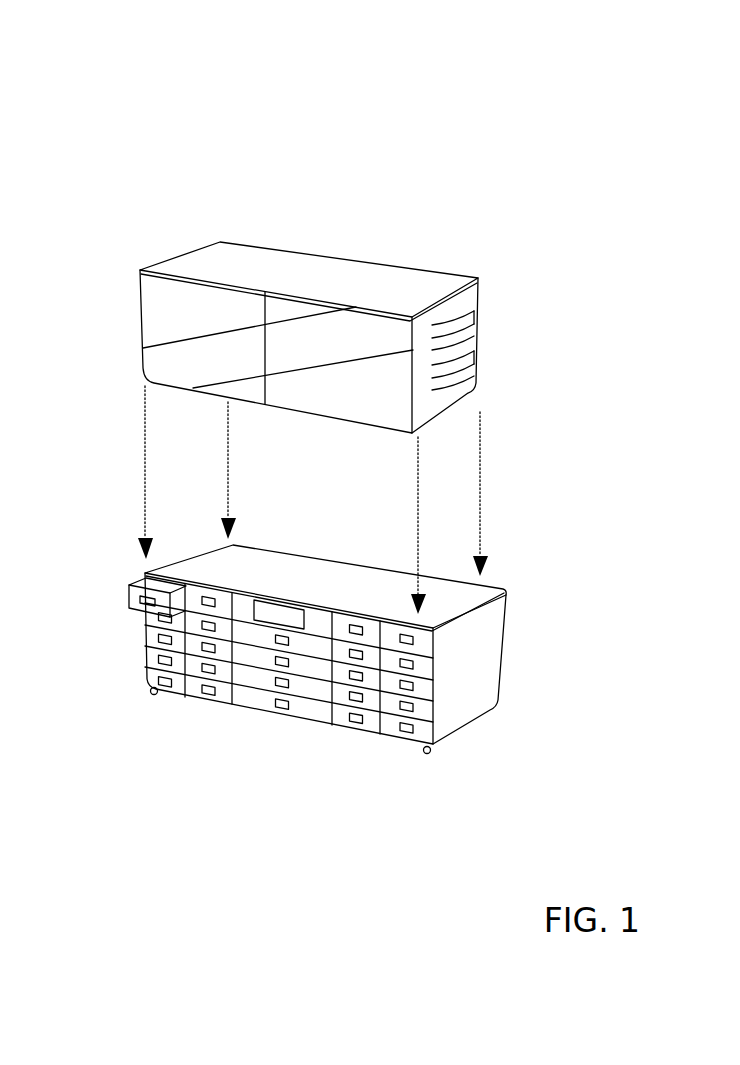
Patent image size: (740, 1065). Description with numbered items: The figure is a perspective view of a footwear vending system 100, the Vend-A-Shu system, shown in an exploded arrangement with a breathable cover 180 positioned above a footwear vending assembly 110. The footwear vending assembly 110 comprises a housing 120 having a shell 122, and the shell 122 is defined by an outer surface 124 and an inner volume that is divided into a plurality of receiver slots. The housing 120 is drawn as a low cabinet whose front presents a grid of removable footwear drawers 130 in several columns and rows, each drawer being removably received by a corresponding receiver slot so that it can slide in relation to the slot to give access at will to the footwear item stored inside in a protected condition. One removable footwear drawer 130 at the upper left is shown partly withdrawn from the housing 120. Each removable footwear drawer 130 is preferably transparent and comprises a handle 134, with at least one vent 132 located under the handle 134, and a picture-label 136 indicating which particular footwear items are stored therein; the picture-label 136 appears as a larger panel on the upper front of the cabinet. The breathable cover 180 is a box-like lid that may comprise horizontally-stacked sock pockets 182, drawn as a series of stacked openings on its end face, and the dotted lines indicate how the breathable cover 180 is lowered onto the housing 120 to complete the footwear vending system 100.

The footwear vending system 100 is at (529, 97).
The footwear vending assembly 110 is at (234, 677).
The housing 120 is at (325, 663).
The shell 122 is at (506, 627).
The outer surface 124 is at (487, 655).
The removable footwear drawer 130 is at (128, 608).
The vent 132 is at (166, 690).
The handle 134 is at (405, 740).
The picture-label 136 is at (277, 603).
The breathable cover 180 is at (347, 321).
The horizontally-stacked sock pockets 182 is at (458, 340).